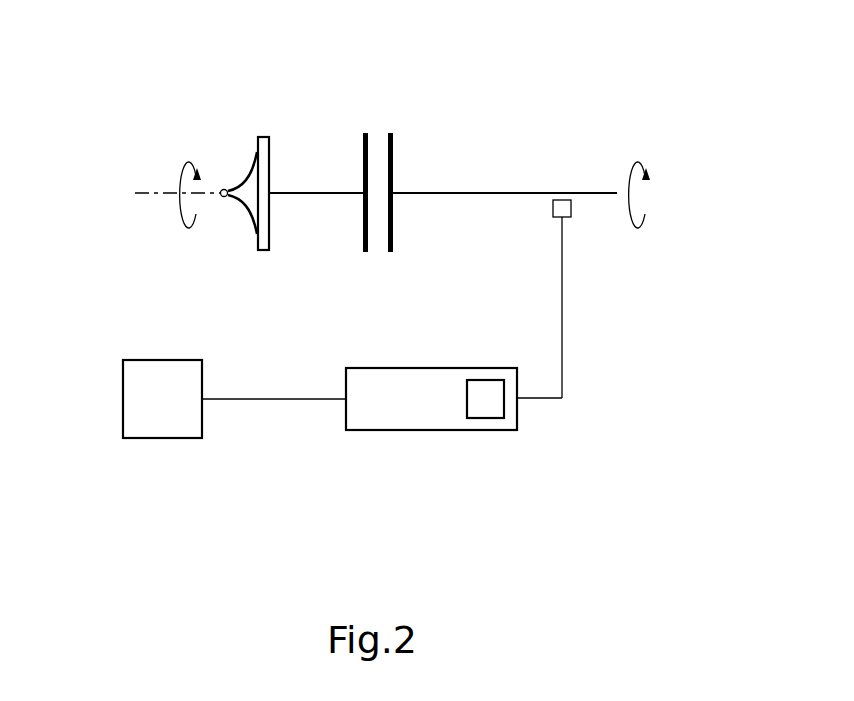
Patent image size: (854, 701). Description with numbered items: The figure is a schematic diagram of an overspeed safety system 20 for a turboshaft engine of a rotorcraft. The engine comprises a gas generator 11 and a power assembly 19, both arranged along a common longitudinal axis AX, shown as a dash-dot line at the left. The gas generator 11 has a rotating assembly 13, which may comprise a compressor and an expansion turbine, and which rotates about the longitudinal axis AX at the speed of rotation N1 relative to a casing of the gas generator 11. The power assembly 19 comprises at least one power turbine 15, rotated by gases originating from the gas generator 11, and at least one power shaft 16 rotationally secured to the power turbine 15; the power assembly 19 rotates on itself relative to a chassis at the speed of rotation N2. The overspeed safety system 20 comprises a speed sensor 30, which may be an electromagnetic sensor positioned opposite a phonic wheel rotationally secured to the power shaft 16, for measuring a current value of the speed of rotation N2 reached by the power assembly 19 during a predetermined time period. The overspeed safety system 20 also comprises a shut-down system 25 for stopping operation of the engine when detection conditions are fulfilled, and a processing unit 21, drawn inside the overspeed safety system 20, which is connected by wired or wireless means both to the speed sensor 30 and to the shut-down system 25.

The longitudinal axis AX is at (148, 183).
The speed of rotation N1 is at (192, 179).
The speed of rotation N2 is at (642, 179).
The gas generator 11 is at (307, 140).
The rotating assembly 13 is at (313, 232).
The power turbine 15 is at (421, 232).
The power shaft 16 is at (528, 220).
The power assembly 19 is at (443, 185).
The speed sensor 30 is at (572, 209).
The shut-down system 25 is at (159, 333).
The overspeed safety system 20 is at (454, 462).
The processing unit 21 is at (485, 418).